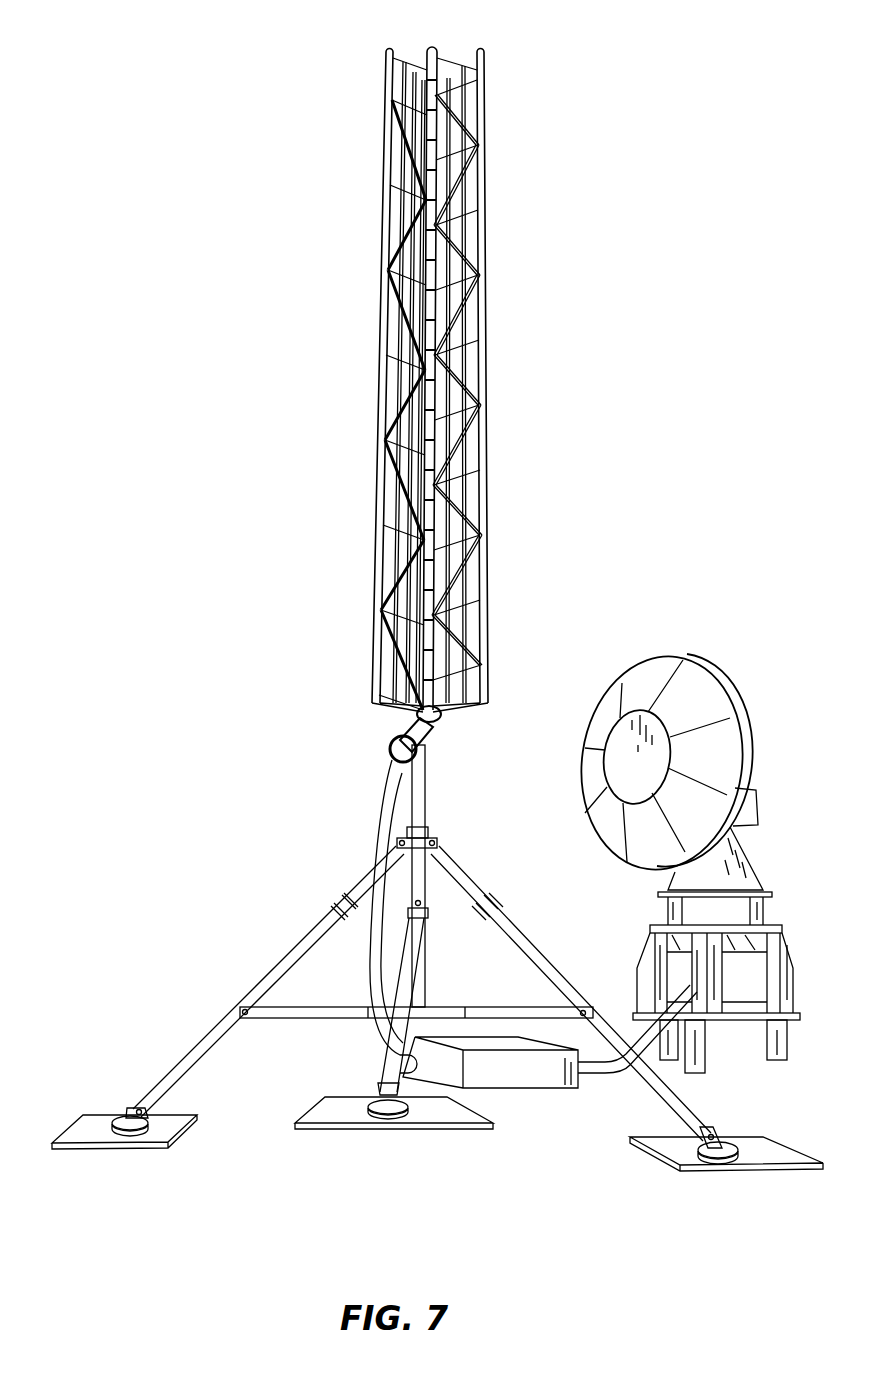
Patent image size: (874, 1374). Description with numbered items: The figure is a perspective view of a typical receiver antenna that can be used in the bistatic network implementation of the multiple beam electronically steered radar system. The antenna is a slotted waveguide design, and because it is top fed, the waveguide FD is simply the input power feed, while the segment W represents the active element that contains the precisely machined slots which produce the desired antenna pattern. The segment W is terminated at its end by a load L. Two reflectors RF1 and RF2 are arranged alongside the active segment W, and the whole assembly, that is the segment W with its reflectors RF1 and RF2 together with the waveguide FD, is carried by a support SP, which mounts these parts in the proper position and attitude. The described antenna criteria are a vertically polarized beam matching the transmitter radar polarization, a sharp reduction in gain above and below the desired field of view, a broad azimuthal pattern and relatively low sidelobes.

The reflector RF1 is at (384, 80).
The reflector RF2 is at (485, 333).
The segment W is at (427, 584).
The load L is at (446, 733).
The waveguide FD is at (372, 815).
The support SP is at (421, 808).